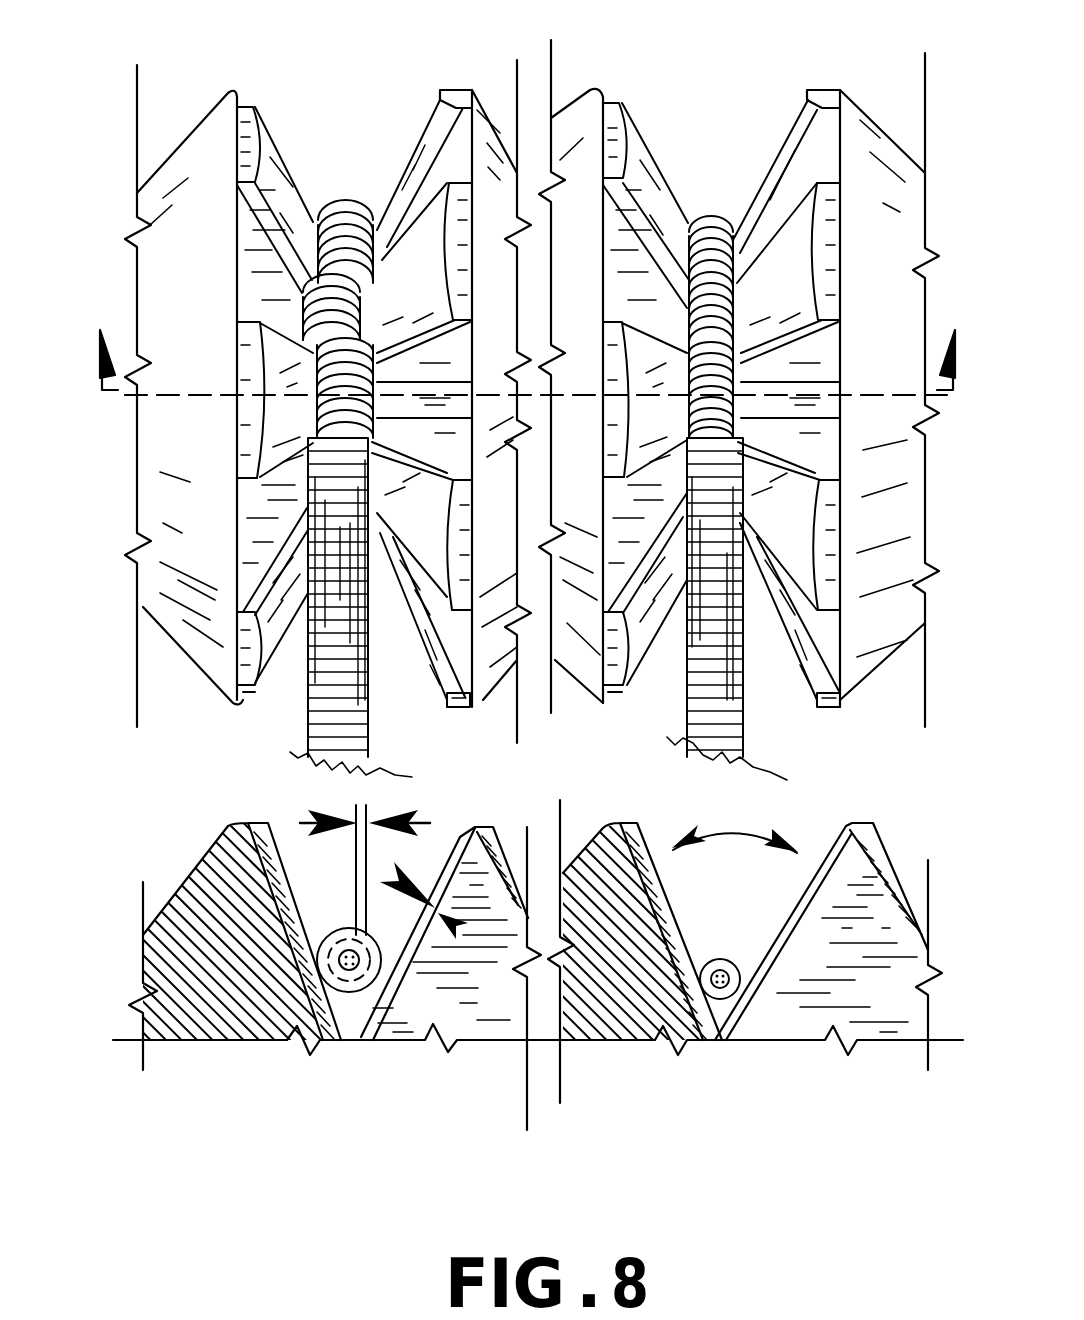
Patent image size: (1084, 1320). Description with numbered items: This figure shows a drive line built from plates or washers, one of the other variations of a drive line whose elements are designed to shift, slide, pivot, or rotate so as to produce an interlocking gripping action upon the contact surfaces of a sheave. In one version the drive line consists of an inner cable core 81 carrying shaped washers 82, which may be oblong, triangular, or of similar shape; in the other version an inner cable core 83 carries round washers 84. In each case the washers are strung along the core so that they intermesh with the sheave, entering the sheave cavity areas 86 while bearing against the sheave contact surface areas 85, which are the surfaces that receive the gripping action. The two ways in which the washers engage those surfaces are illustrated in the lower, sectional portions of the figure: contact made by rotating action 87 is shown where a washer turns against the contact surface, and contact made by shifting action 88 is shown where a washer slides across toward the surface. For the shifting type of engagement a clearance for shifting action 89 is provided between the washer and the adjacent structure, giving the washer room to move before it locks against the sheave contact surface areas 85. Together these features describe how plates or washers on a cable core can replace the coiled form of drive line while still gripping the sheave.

The inner cable core 81 is at (722, 993).
The shaped washers 82 is at (687, 700).
The inner cable core 83 is at (349, 973).
The round washers 84 is at (370, 727).
The sheave contact surface areas 85 is at (650, 187).
The sheave cavity areas 86 is at (249, 233).
The contact made by rotating action 87 is at (733, 837).
The contact made by shifting action 88 is at (458, 930).
The clearance for shifting action 89 is at (300, 823).